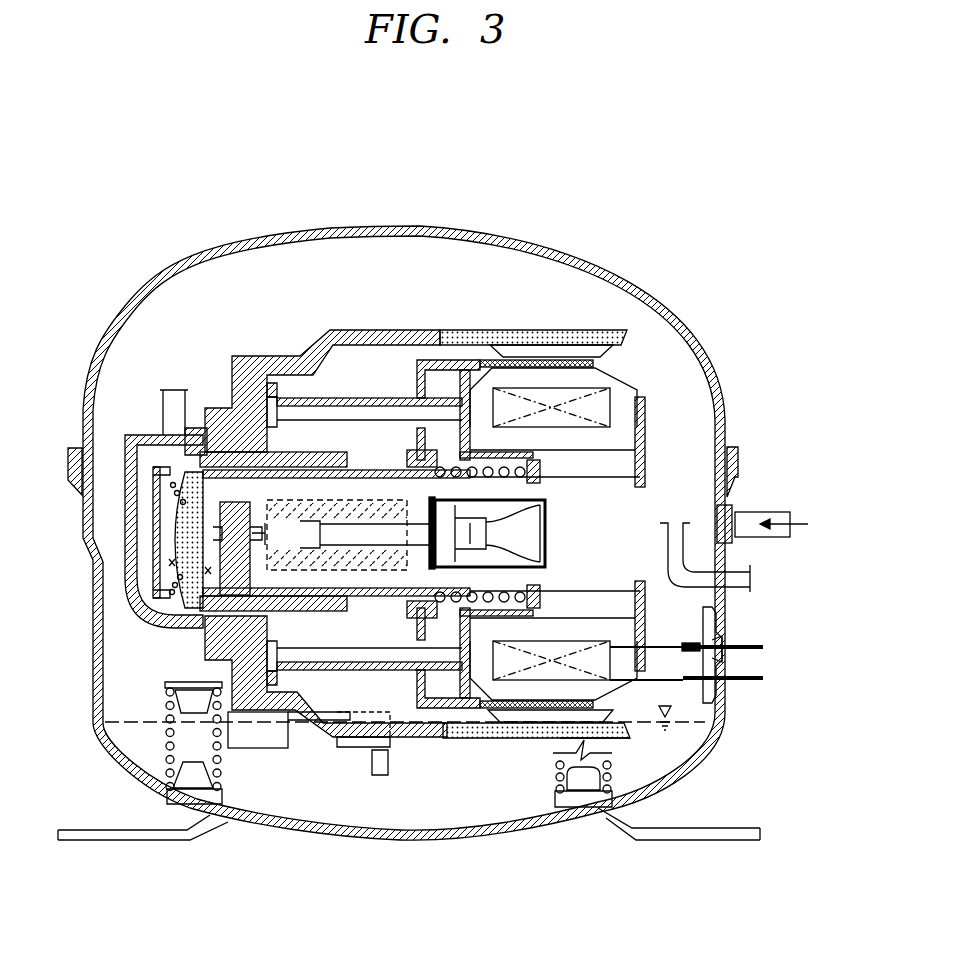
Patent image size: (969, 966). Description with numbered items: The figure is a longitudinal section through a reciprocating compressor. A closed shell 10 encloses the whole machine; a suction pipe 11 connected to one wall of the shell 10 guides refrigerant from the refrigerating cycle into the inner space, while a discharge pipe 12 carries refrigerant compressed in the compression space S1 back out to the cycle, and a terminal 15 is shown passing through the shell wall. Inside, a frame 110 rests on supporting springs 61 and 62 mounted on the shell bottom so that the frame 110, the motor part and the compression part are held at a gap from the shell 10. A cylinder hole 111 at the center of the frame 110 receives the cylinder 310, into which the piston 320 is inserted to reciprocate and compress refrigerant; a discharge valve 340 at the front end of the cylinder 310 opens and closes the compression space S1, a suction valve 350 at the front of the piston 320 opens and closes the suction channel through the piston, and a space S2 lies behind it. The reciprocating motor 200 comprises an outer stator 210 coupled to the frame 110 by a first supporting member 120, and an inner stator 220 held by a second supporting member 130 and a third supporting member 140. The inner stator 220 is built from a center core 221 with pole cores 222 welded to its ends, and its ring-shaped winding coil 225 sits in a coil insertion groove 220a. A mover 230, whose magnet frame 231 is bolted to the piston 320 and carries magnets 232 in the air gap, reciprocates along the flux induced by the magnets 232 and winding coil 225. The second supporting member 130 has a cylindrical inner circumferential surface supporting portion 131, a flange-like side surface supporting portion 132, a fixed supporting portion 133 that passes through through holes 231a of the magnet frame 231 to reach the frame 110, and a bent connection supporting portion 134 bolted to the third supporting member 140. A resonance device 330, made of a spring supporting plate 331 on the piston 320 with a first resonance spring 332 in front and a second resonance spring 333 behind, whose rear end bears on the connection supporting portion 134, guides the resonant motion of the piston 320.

The shell 10 is at (168, 290).
The suction pipe 11 is at (764, 532).
The discharge pipe 12 is at (740, 590).
The terminal 15 is at (744, 683).
The supporting spring 61 is at (166, 760).
The supporting spring 62 is at (612, 778).
The frame 110 is at (318, 330).
The cylinder hole 111 is at (272, 382).
The first supporting member 120 is at (552, 330).
The second supporting member 130 is at (336, 554).
The inner circumferential surface supporting portion 131 is at (382, 612).
The side surface supporting portion 132 is at (407, 612).
The fixed supporting portion 133 is at (340, 600).
The connection supporting portion 134 is at (362, 612).
The third supporting member 140 is at (645, 424).
The reciprocating motor 200 is at (553, 394).
The outer stator 210 is at (560, 345).
The inner stator 220 is at (585, 440).
The coil insertion groove 220a is at (630, 731).
The center core 221 is at (522, 705).
The pole core 222 is at (478, 690).
The winding coil 225 is at (553, 715).
The mover 230 is at (483, 362).
The magnet frame 231 is at (446, 604).
The through hole 231a is at (434, 466).
The magnet 232 is at (598, 660).
The cylinder 310 is at (240, 455).
The piston 320 is at (160, 465).
The resonance device 330 is at (437, 344).
The spring supporting plate 331 is at (428, 496).
The first resonance spring 332 is at (408, 580).
The second resonance spring 333 is at (503, 365).
The discharge valve 340 is at (160, 515).
The suction valve 350 is at (187, 502).
The compression space S1 is at (165, 588).
The second space S2 is at (172, 562).